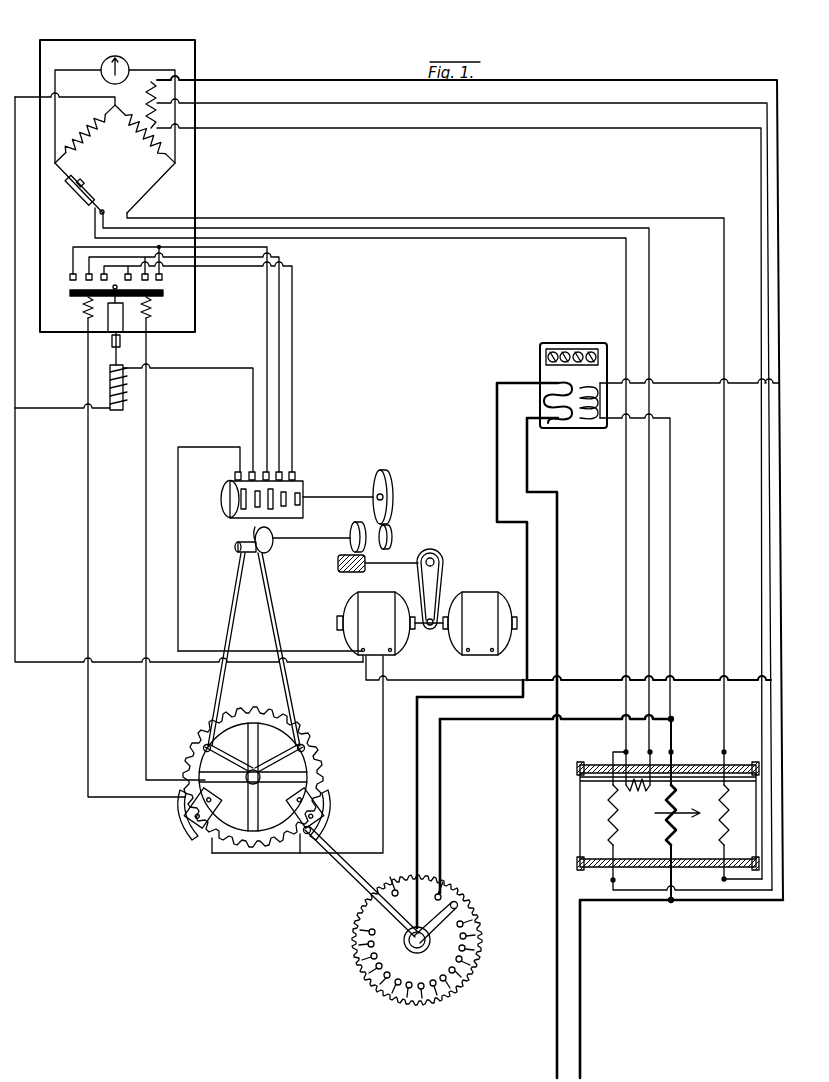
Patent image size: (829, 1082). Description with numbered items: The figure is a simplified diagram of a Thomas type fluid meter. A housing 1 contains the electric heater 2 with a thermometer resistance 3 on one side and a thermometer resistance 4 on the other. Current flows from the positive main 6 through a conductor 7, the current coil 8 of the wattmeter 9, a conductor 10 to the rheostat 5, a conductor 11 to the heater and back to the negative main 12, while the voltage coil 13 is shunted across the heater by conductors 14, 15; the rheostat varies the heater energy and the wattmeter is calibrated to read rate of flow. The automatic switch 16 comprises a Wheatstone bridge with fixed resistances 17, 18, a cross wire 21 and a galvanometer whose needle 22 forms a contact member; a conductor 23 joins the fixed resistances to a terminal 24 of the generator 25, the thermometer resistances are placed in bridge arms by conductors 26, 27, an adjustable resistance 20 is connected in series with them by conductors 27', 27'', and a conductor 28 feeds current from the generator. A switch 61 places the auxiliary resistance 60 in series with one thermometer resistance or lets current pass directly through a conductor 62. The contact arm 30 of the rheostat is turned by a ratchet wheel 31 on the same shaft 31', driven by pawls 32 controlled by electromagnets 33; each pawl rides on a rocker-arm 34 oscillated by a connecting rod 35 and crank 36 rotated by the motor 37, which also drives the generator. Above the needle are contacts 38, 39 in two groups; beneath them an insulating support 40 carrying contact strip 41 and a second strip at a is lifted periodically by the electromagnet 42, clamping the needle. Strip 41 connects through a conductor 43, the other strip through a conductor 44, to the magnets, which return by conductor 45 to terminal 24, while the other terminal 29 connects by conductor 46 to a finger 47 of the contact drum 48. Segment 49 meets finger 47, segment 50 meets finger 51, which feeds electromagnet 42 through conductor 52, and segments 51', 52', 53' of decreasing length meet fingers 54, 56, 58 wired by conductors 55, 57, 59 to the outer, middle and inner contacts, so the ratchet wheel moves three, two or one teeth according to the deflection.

The housing 1 is at (694, 764).
The electric heater 2 is at (666, 830).
The thermometer resistance 3 is at (606, 815).
The thermometer resistance 4 is at (732, 815).
The rheostat 5 is at (484, 927).
The positive main 6 is at (552, 1058).
The conductor 7 is at (558, 645).
The current coil 8 is at (546, 402).
The wattmeter 9 is at (574, 342).
The conductor 10 is at (526, 552).
The conductor 11 is at (582, 718).
The negative main 12 is at (583, 1056).
The voltage coil 13 is at (600, 388).
The conductor 14 is at (671, 513).
The conductor 15 is at (782, 560).
The automatic switch 16 is at (195, 163).
The fixed resistance 17 is at (86, 138).
The fixed resistance 18 is at (152, 150).
The adjustable resistance 20 is at (148, 95).
The cross wire 21 is at (170, 78).
The galvanometer needle 22 is at (124, 60).
The conductor 23 is at (15, 380).
The generator terminal 24 is at (386, 660).
The generator 25 is at (352, 605).
The conductor 26 is at (350, 218).
The conductor 27 is at (376, 473).
The conductor 27' is at (470, 476).
The conductor 27'' is at (459, 501).
The conductor 28 is at (624, 105).
The generator terminal 29 is at (362, 665).
The contact arm 30 is at (432, 948).
The ratchet wheel 31 is at (264, 777).
The shaft 31' is at (362, 881).
The pawl 32 is at (193, 832).
The electromagnet 33 is at (180, 820).
The rocker-arm 34 is at (246, 755).
The connecting rod 35 is at (270, 618).
The crank 36 is at (274, 558).
The motor 37 is at (480, 598).
The contacts 38 is at (70, 292).
The contacts 39 is at (160, 281).
The insulating support 40 is at (150, 306).
The contact strip 41 is at (80, 300).
The electromagnet 42 is at (117, 412).
The conductor 43 is at (88, 535).
The conductor 44 is at (146, 535).
The conductor 45 is at (312, 855).
The conductor 46 is at (178, 535).
The finger 47 is at (234, 479).
The contact drum 48 is at (222, 505).
The contact segment 49 is at (236, 549).
The contact segment 50 is at (252, 540).
The finger 51 is at (225, 463).
The contact segment 51' is at (290, 524).
The conductor 52 is at (188, 418).
The contact segment 52' is at (314, 526).
The contact segment 53' is at (315, 513).
The finger 54 is at (279, 470).
The conductor 55 is at (269, 367).
The finger 56 is at (284, 470).
The conductor 57 is at (281, 380).
The finger 58 is at (295, 471).
The conductor 59 is at (293, 396).
The auxiliary resistance 60 is at (644, 790).
The switch 61 is at (74, 200).
The conductor 62 is at (472, 236).
The pivot a is at (192, 298).